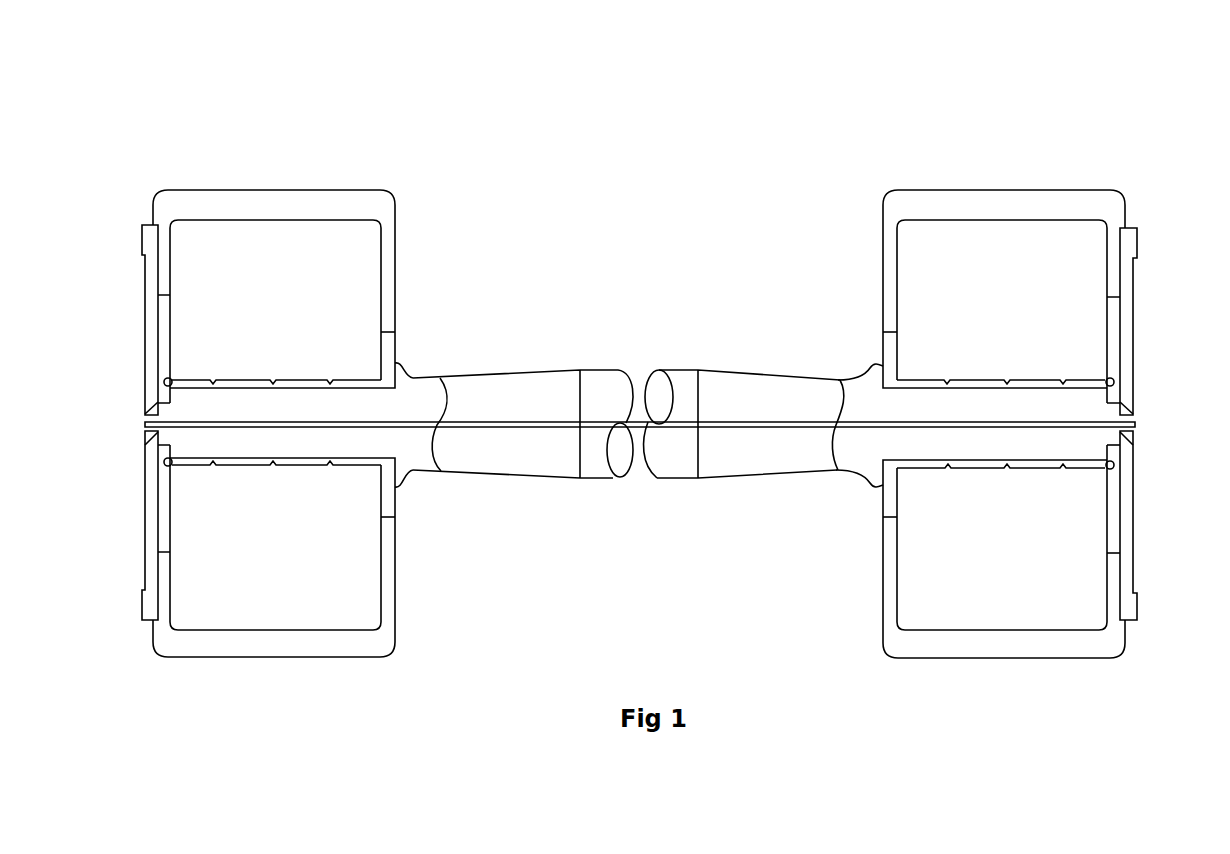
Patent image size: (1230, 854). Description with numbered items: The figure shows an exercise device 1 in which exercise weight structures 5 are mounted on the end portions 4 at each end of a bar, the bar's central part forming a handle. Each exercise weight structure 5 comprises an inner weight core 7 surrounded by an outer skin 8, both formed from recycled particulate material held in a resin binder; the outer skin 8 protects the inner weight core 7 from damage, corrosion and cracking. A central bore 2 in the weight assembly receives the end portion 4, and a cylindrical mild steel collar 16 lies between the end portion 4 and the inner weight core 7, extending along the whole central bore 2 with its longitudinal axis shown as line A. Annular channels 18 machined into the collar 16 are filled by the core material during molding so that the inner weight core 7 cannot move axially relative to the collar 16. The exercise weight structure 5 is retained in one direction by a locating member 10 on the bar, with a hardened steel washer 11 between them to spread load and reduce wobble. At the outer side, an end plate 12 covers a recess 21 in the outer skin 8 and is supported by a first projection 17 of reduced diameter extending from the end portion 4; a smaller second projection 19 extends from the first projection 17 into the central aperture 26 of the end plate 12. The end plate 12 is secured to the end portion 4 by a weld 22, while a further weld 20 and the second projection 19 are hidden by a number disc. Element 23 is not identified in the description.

The exercise device 1 is at (172, 140).
The central bore 2 is at (245, 455).
The end portion 4 is at (365, 432).
The exercise weight structure 5 is at (392, 677).
The inner weight core 7 is at (357, 232).
The outer skin 8 is at (392, 255).
The locating member 10 is at (879, 373).
The washer 11 is at (390, 343).
The end plate 12 is at (152, 297).
The collar 16 is at (305, 465).
The first projection 17 is at (1115, 403).
The annular channel 18 is at (1007, 465).
The second projection 19 is at (1128, 410).
The weld 20 is at (167, 465).
The recess 21 is at (165, 335).
The weld 22 is at (171, 381).
The tab 23 is at (1128, 537).
The central aperture 26 is at (1122, 435).